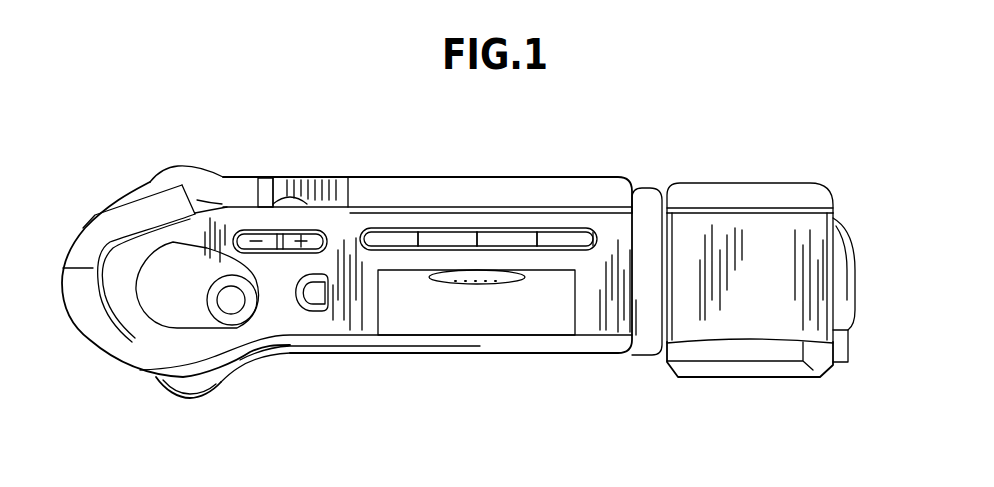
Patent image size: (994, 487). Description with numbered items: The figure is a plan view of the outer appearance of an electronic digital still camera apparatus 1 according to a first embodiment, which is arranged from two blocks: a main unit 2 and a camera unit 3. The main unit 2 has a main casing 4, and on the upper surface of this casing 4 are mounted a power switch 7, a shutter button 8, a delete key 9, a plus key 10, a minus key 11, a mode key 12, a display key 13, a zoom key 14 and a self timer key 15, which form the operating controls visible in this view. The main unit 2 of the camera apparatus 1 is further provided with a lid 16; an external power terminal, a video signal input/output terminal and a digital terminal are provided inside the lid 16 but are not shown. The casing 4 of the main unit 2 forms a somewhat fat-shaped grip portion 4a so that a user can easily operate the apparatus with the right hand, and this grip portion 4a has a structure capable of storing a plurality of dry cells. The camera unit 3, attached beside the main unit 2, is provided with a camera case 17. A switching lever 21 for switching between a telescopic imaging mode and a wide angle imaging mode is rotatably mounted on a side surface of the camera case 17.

The electronic digital still camera apparatus 1 is at (652, 179).
The main unit 2 is at (463, 352).
The camera unit 3 is at (731, 379).
The main casing 4 is at (356, 315).
The grip portion 4a is at (194, 399).
The power switch 7 is at (316, 177).
The shutter button 8 is at (236, 306).
The delete key 9 is at (313, 298).
The plus key 10 is at (333, 241).
The minus key 11 is at (217, 218).
The mode key 12 is at (390, 240).
The display key 13 is at (447, 240).
The zoom key 14 is at (507, 240).
The self timer key 15 is at (567, 240).
The lid 16 is at (530, 321).
The camera case 17 is at (727, 223).
The switching lever 21 is at (843, 282).